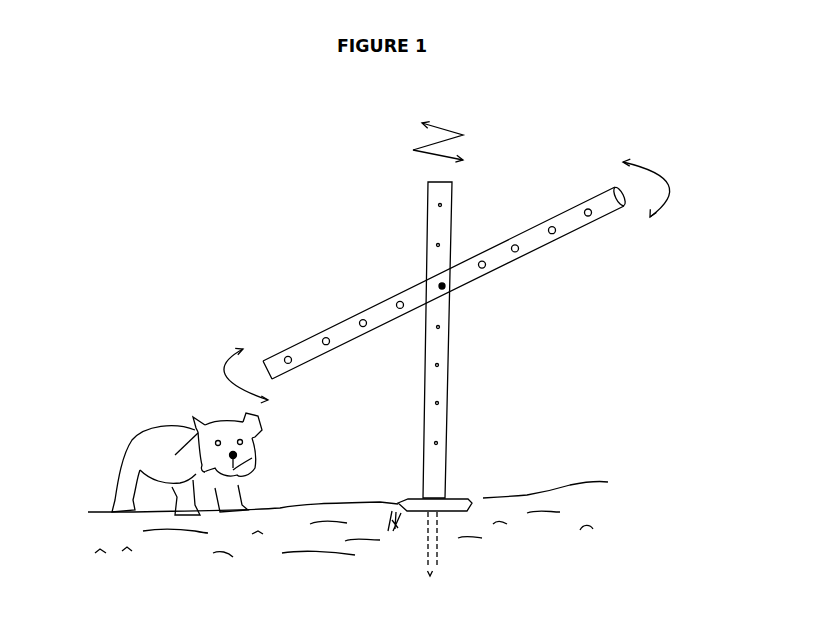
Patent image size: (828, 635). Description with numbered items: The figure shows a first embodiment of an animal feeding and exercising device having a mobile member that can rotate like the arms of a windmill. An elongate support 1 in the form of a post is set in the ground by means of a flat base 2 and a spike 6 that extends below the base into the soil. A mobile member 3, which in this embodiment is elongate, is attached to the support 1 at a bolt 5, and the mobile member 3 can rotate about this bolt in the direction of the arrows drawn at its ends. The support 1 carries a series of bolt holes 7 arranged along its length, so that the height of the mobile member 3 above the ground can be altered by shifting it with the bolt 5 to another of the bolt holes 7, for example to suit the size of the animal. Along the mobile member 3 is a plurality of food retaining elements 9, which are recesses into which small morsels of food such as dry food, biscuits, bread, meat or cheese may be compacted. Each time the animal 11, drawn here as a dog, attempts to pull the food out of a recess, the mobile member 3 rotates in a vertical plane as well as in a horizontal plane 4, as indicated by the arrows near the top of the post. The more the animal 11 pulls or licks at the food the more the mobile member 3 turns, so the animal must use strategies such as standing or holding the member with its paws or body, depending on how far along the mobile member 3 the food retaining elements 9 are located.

The elongate support 1 is at (437, 350).
The flat base 2 is at (472, 505).
The mobile member 3 is at (573, 223).
The horizontal plane 4 is at (620, 147).
The bolt 5 is at (445, 287).
The spike 6 is at (435, 540).
The bolt holes 7 is at (435, 367).
The food retaining elements 9 is at (377, 275).
The animal 11 is at (153, 420).